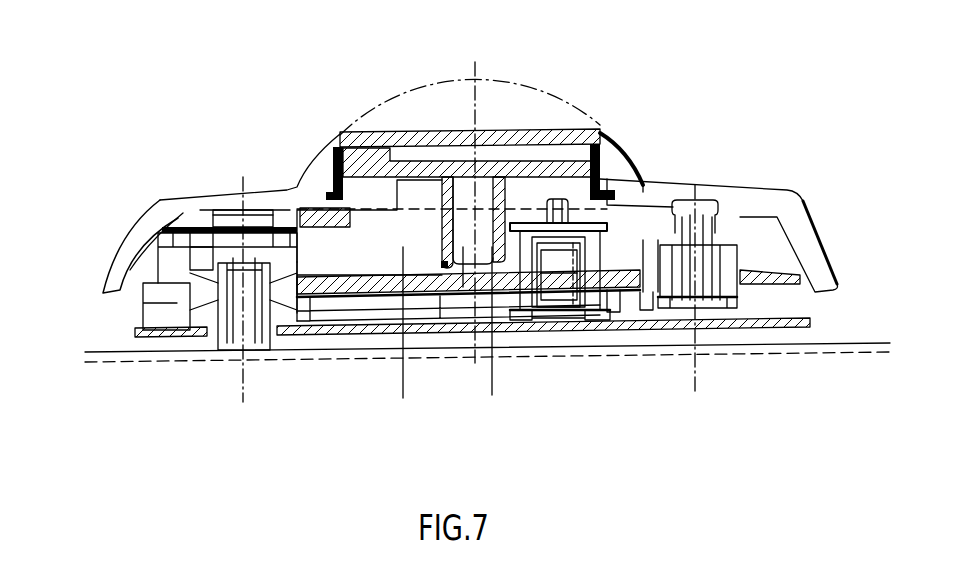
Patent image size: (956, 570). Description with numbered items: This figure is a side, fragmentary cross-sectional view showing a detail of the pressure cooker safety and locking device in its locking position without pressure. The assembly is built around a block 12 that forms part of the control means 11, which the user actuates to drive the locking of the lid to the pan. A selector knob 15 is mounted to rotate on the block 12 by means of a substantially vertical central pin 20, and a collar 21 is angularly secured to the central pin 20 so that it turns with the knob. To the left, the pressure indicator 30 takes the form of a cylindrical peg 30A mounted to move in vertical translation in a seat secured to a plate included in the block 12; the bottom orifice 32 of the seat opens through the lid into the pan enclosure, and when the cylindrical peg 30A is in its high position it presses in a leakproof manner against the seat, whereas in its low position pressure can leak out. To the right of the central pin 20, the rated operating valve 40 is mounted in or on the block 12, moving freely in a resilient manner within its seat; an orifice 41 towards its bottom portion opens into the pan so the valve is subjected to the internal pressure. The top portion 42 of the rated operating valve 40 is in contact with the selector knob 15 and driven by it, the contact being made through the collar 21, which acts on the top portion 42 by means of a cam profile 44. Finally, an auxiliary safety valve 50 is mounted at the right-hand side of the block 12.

The control means 11 is at (520, 112).
The block 12 is at (625, 245).
The selector knob 15 is at (410, 136).
The central pin 20 is at (500, 205).
The collar 21 is at (390, 172).
The pressure indicator 30 is at (225, 170).
The cylindrical peg 30A is at (178, 218).
The bottom orifice 32 is at (232, 358).
The rated operating valve 40 is at (566, 292).
The orifice 41 is at (553, 300).
The top portion 42 is at (481, 342).
The cam profile 44 is at (598, 130).
The safety valve 50 is at (730, 220).